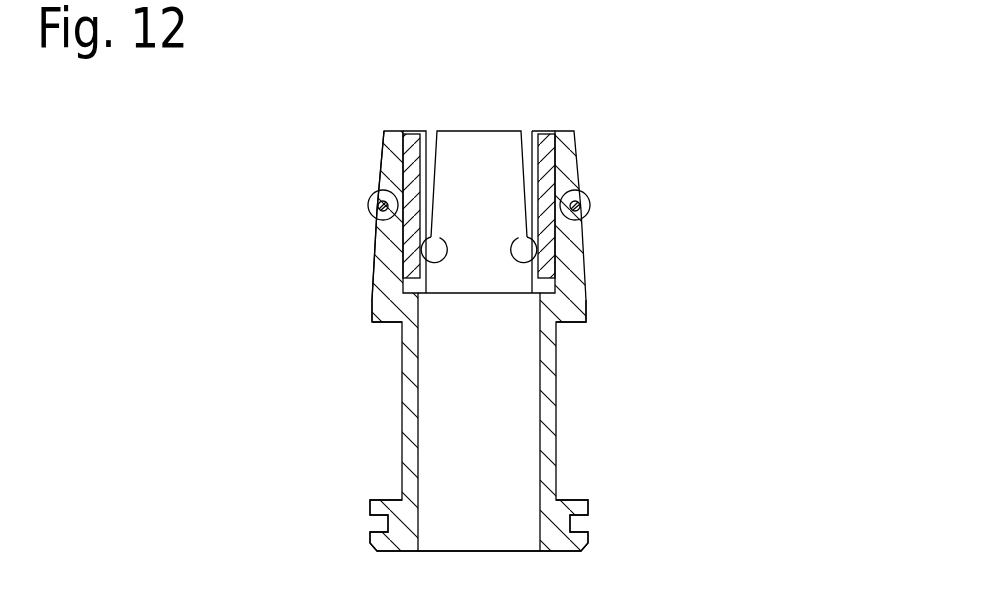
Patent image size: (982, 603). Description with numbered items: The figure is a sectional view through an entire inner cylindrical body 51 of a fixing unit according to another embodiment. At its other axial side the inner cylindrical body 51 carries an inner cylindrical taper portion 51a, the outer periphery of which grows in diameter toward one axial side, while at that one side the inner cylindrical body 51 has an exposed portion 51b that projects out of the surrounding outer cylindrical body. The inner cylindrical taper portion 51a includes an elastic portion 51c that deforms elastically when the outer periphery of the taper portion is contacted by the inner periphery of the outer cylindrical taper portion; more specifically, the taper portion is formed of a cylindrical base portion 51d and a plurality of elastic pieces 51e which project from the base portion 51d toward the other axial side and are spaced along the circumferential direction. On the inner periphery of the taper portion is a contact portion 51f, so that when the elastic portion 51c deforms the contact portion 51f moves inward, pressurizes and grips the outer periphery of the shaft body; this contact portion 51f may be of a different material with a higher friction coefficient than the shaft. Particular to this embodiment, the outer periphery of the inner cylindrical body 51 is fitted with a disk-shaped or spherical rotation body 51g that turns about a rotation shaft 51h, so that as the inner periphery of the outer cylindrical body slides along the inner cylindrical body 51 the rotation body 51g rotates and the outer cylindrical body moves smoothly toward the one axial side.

The inner cylindrical body 51 is at (740, 152).
The inner cylindrical taper portion 51a is at (596, 160).
The exposed portion 51b is at (556, 487).
The elastic portion 51c is at (358, 167).
The base portion 51d is at (587, 303).
The elastic pieces 51e is at (394, 130).
The contact portion 51f is at (411, 143).
The rotation body 51g is at (372, 214).
The rotation shaft 51h is at (372, 197).